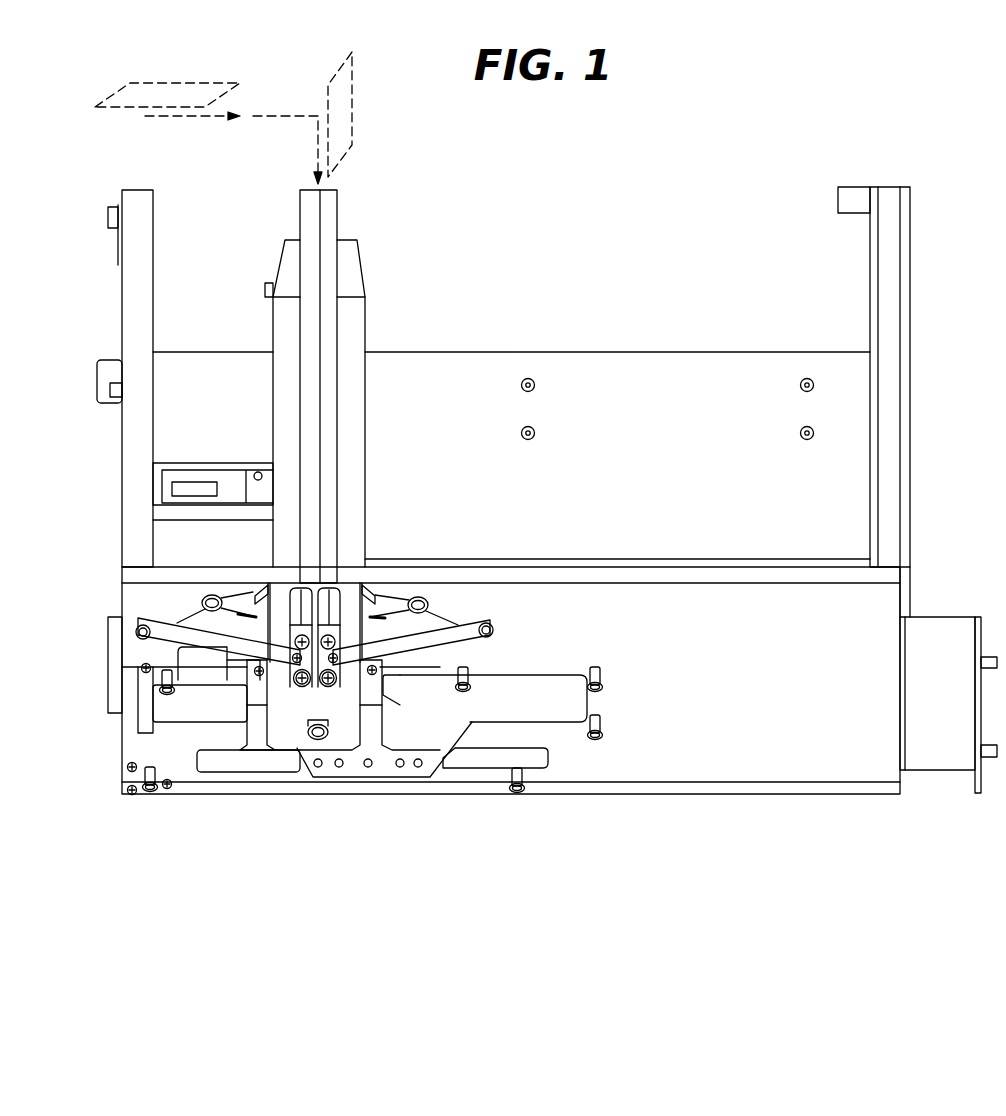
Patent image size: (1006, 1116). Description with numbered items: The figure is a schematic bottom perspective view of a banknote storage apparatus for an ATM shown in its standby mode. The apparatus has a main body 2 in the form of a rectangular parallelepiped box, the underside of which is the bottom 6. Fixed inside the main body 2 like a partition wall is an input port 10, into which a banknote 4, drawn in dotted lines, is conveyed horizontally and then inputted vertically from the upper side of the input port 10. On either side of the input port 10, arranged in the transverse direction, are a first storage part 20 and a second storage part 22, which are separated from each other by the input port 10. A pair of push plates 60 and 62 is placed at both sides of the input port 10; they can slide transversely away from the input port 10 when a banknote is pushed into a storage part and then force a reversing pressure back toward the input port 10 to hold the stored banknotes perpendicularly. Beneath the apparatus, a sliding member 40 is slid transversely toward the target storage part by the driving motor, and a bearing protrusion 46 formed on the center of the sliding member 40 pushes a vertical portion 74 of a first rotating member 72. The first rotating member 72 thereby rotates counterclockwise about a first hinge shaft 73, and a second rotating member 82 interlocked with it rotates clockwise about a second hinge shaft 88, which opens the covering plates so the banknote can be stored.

The main body 2 is at (927, 250).
The banknote 4 is at (353, 112).
The bottom 6 is at (725, 753).
The input port 10 is at (347, 200).
The first storage part 20 is at (202, 257).
The second storage part 22 is at (584, 259).
The sliding member 40 is at (407, 735).
The bearing protrusion 46 is at (320, 742).
The push plate 60 is at (273, 325).
The push plate 62 is at (365, 325).
The first rotating member 72 is at (410, 703).
The first hinge shaft 73 is at (257, 705).
The vertical portion 74 is at (264, 740).
The second rotating member 82 is at (460, 606).
The second hinge shaft 88 is at (140, 630).